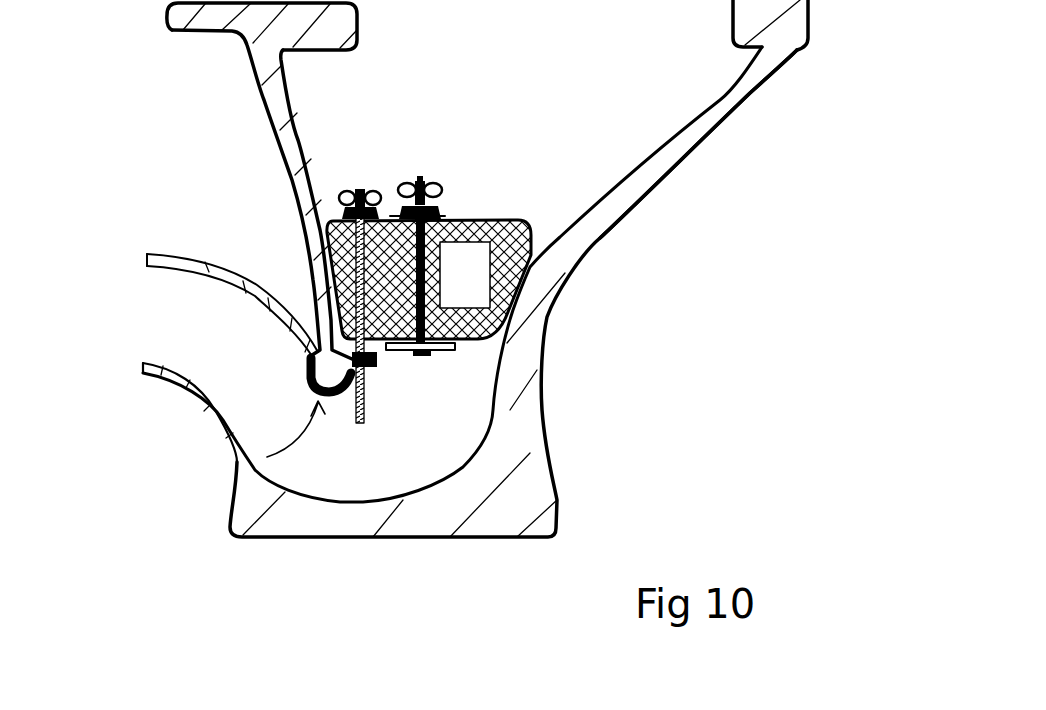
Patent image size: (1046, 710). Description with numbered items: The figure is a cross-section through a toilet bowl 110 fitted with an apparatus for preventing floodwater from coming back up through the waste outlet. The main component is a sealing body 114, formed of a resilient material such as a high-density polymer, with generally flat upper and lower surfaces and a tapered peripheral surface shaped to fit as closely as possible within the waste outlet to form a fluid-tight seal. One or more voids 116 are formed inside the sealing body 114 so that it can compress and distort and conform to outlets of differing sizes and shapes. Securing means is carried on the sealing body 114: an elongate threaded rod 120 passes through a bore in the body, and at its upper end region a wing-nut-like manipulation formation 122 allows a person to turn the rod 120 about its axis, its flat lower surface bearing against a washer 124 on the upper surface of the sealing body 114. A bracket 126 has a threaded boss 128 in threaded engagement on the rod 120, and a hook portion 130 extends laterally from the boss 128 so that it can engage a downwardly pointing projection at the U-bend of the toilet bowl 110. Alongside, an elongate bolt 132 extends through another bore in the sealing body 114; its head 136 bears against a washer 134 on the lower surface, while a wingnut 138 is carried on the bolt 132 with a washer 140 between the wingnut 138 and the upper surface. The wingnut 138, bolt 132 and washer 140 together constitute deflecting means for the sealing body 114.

The toilet bowl 110 is at (722, 118).
The sealing body 114 is at (535, 243).
The void 116 is at (492, 220).
The threaded rod 120 is at (367, 418).
The manipulation formation 122 is at (347, 193).
The washer 124 is at (337, 217).
The bracket 126 is at (267, 457).
The threaded boss 128 is at (375, 362).
The hook portion 130 is at (310, 373).
The bolt 132 is at (490, 272).
The washer 134 is at (455, 347).
The head 136 is at (433, 352).
The wingnut 138 is at (447, 187).
The washer 140 is at (466, 218).